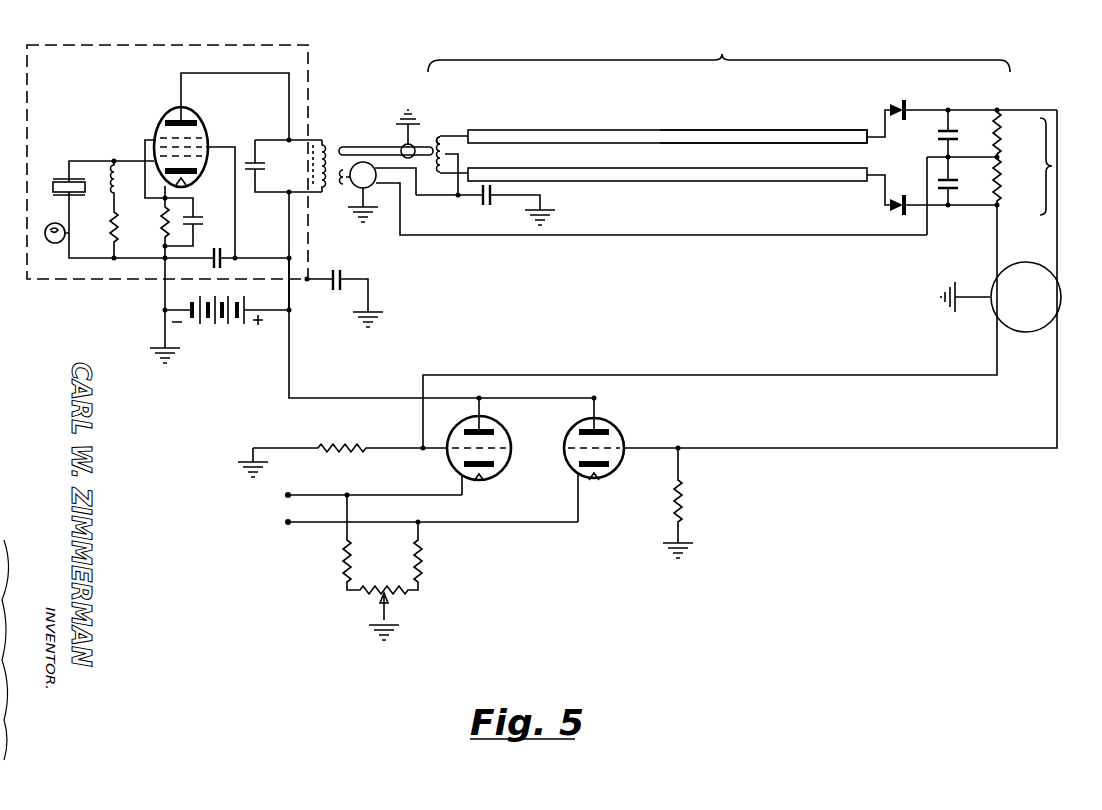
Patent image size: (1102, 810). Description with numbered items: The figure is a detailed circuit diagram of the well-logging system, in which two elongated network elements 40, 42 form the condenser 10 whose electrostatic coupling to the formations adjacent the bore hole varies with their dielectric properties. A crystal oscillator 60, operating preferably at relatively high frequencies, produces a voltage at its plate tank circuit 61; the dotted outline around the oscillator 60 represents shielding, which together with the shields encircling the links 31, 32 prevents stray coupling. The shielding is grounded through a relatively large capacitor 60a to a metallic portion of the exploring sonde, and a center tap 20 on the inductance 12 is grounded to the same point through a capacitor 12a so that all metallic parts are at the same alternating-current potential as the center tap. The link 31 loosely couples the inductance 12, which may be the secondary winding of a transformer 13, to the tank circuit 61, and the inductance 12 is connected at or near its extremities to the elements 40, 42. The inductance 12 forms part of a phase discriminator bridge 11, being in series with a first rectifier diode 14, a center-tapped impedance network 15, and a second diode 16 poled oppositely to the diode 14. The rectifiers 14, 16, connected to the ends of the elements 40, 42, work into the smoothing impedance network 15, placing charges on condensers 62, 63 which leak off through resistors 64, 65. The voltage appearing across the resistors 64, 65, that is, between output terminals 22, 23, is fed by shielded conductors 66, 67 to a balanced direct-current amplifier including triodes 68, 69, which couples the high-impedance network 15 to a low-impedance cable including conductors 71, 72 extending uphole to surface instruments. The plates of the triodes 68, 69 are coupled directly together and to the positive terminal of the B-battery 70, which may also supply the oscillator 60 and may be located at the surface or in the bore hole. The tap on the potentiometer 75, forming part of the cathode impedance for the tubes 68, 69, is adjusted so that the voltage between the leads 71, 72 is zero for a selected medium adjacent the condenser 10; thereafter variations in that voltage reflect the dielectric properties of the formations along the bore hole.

The condenser 10 is at (582, 154).
The phase discriminator bridge 11 is at (726, 53).
The inductance 12 is at (446, 134).
The capacitor 12a is at (488, 206).
The transformer 13 is at (438, 135).
The first rectifier diode 14 is at (900, 102).
The center-tapped impedance network 15 is at (1054, 165).
The second diode 16 is at (898, 208).
The center tap 20 is at (448, 152).
The output terminal 22 is at (997, 110).
The output terminal 23 is at (1011, 198).
The link 31 is at (371, 150).
The link 32 is at (392, 178).
The elongated network element 40 is at (692, 136).
The elongated network element 42 is at (718, 181).
The crystal oscillator 60 is at (201, 45).
The capacitor 60a is at (336, 252).
The plate tank circuit 61 is at (300, 179).
The condenser 62 is at (961, 132).
The condenser 63 is at (960, 190).
The resistor 64 is at (998, 138).
The resistor 65 is at (998, 174).
The shielded conductor 66 is at (1072, 234).
The shielded conductor 67 is at (998, 233).
The triode 68 is at (618, 470).
The triode 69 is at (456, 462).
The B-battery 70 is at (222, 326).
The conductor 71 is at (322, 474).
The conductor 72 is at (330, 522).
The potentiometer 75 is at (399, 558).